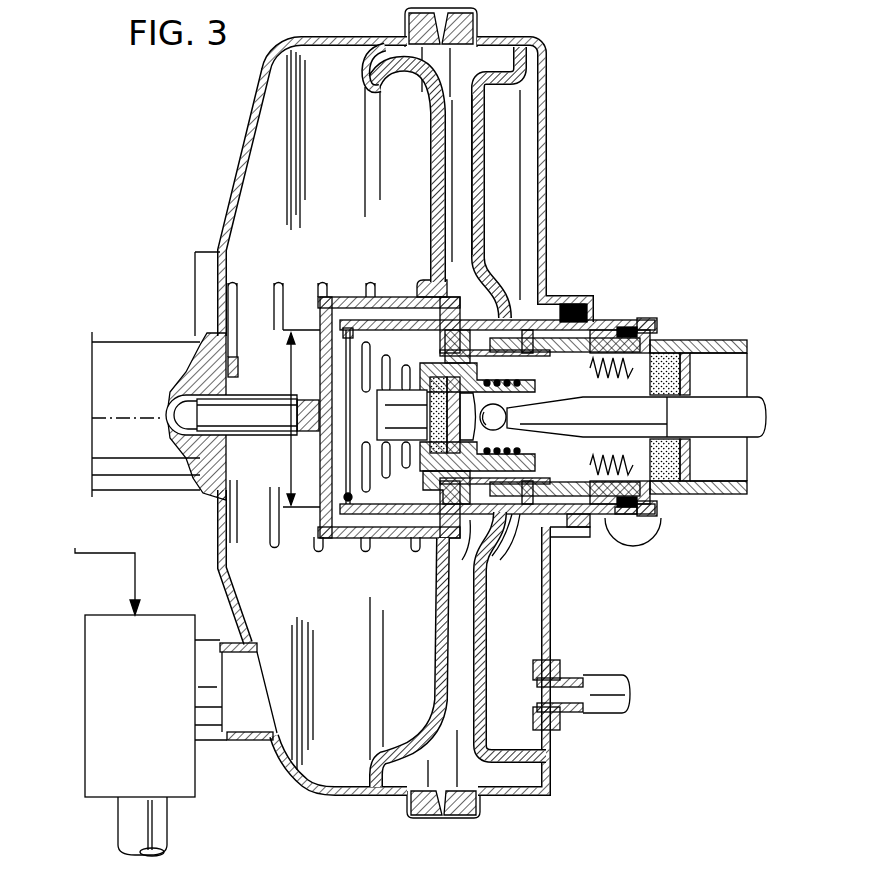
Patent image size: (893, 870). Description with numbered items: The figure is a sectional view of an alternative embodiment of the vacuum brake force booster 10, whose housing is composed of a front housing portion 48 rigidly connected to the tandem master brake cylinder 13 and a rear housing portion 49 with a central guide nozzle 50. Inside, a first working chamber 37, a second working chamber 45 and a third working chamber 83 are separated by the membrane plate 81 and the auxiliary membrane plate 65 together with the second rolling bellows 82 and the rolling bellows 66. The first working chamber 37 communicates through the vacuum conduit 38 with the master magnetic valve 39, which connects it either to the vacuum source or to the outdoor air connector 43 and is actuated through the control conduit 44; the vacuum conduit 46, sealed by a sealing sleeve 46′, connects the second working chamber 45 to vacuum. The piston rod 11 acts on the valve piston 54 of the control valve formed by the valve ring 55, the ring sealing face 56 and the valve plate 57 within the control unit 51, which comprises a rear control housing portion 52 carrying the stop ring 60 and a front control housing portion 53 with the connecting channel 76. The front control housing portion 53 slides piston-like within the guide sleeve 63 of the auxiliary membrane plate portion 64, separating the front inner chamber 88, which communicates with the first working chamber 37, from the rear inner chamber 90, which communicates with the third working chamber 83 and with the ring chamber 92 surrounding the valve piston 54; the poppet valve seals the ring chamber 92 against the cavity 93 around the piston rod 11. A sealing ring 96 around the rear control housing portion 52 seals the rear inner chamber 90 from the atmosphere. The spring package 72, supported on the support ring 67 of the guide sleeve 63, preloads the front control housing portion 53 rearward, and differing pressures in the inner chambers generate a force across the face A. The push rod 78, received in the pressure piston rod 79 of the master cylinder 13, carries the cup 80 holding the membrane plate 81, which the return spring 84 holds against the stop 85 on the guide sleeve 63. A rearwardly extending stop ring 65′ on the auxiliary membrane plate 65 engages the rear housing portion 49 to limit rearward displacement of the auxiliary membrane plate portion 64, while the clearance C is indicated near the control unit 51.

The vacuum brake force booster 10 is at (559, 43).
The piston rod 11 is at (755, 408).
The tandem master brake cylinder 13 is at (140, 352).
The first working chamber 37 is at (245, 187).
The vacuum conduit 38 is at (233, 717).
The master magnetic valve 39 is at (88, 692).
The outdoor air connector 43 is at (128, 832).
The control conduit 44 is at (78, 553).
The second working chamber 45 is at (540, 622).
The vacuum conduit 46 is at (607, 688).
The sealing sleeve 46′ is at (558, 662).
The front housing portion 48 is at (253, 129).
The rear housing portion 49 is at (548, 105).
The guide nozzle 50 is at (558, 298).
The control unit 51 is at (552, 535).
The rear control housing portion 52 is at (714, 481).
The front control housing portion 53 is at (468, 331).
The valve piston 54 is at (597, 508).
The valve ring 55 is at (520, 380).
The ring sealing face 56 is at (552, 333).
The valve plate 57 is at (572, 352).
The stop ring 60 is at (643, 345).
The guide sleeve 63 is at (405, 322).
The auxiliary membrane plate portion 64 is at (524, 532).
The auxiliary membrane plate 65 is at (484, 174).
The stop ring 65′ is at (553, 755).
The rolling bellows 66 is at (484, 137).
The support ring 67 is at (355, 500).
The spring package 72 is at (373, 490).
The connecting channel 76 is at (448, 312).
The push rod 78 is at (177, 403).
The pressure piston rod 79 is at (243, 381).
The cup 80 is at (312, 293).
The membrane plate 81 is at (431, 176).
The second rolling bellows 82 is at (373, 76).
The third working chamber 83 is at (460, 208).
The return spring 84 is at (272, 555).
The stop 85 is at (326, 543).
The front inner chamber 88 is at (382, 300).
The rear inner chamber 90 is at (440, 586).
The ring chamber 92 is at (495, 526).
The cavity 93 is at (660, 356).
The sealing ring 96 is at (632, 514).
The face A is at (290, 470).
The clearance C is at (660, 523).